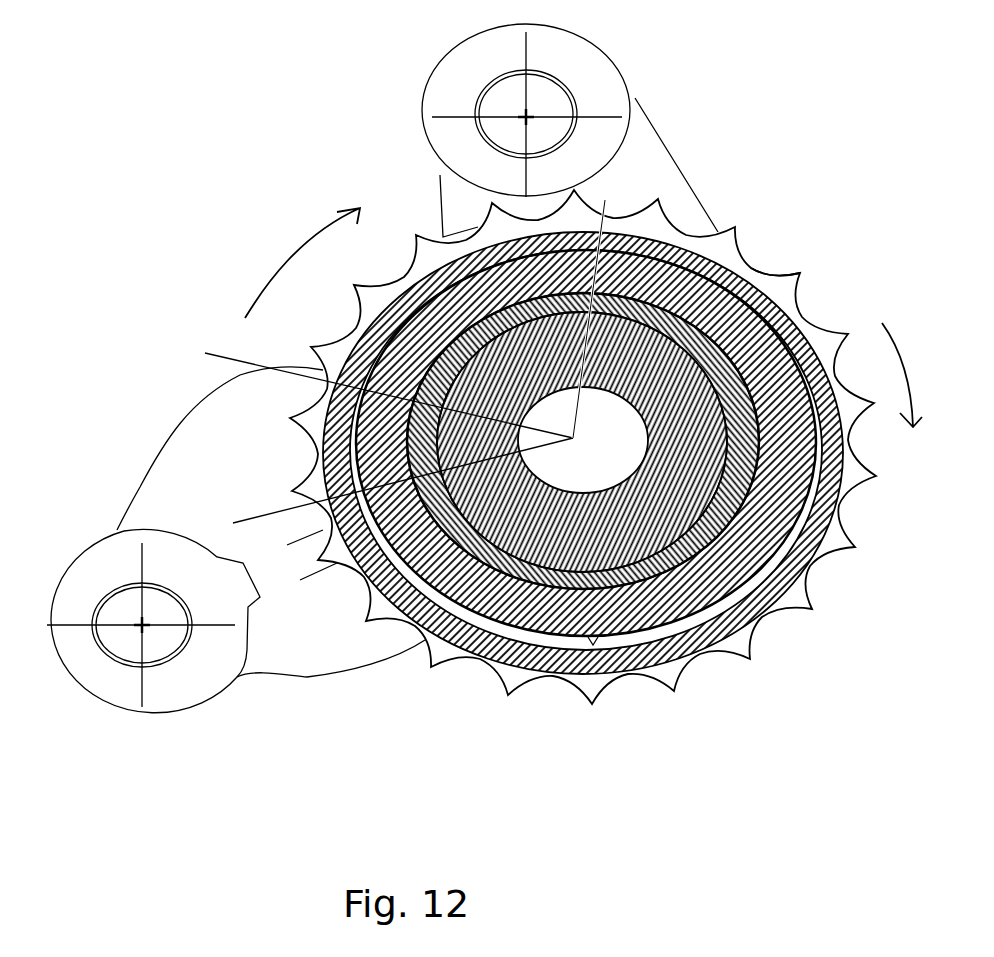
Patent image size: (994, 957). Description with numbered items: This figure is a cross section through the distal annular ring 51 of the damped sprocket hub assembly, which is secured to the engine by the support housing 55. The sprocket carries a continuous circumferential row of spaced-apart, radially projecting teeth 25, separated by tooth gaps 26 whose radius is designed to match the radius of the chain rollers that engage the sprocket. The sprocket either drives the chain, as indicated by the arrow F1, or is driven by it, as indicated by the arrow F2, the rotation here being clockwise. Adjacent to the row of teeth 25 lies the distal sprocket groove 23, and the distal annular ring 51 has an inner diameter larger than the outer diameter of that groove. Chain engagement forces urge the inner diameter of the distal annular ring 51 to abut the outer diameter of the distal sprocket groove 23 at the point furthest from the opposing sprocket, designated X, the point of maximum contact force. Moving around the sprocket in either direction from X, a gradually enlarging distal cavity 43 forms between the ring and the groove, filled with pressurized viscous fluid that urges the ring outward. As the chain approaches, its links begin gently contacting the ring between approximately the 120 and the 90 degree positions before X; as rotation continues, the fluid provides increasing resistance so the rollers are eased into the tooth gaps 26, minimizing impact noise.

The distal sprocket groove 23 is at (693, 613).
The teeth 25 is at (795, 275).
The tooth gaps 26 is at (742, 257).
The distal cavity 43 is at (633, 643).
The distal annular ring 51 is at (550, 675).
The support housing 55 is at (305, 648).
The point of maximum abutment X is at (626, 197).
The driving force arrow F1 is at (293, 263).
The received driving force arrow F2 is at (902, 372).
The 90 degree position 90 is at (364, 386).
The 120 degree position 120 is at (372, 485).